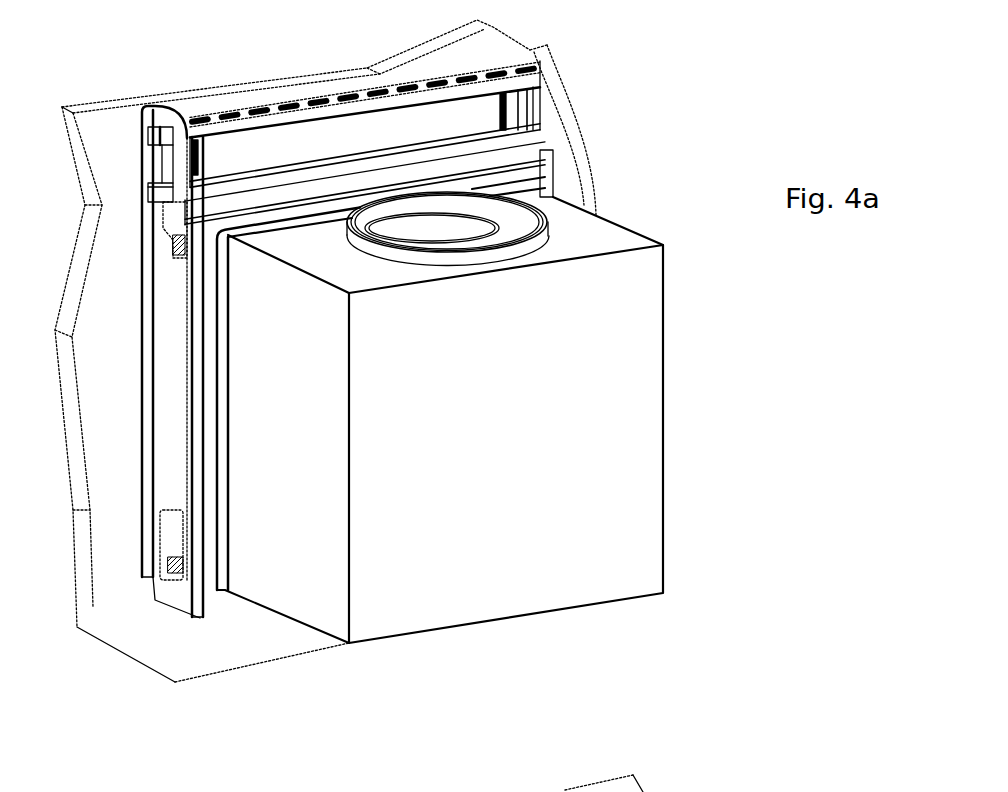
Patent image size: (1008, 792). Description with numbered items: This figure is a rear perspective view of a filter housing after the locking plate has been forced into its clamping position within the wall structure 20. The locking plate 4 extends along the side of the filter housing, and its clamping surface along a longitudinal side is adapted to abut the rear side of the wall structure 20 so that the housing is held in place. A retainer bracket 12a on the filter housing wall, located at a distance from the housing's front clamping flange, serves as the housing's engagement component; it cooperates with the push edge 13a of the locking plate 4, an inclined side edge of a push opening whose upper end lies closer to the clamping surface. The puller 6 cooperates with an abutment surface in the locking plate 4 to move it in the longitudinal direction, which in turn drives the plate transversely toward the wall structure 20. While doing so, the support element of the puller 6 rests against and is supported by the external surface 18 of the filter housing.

The locking plate 4 is at (175, 422).
The puller 6 is at (273, 143).
The retainer bracket 12a is at (173, 245).
The push edge 13a is at (162, 217).
The external surface 18 is at (537, 149).
The wall structure 20 is at (120, 598).